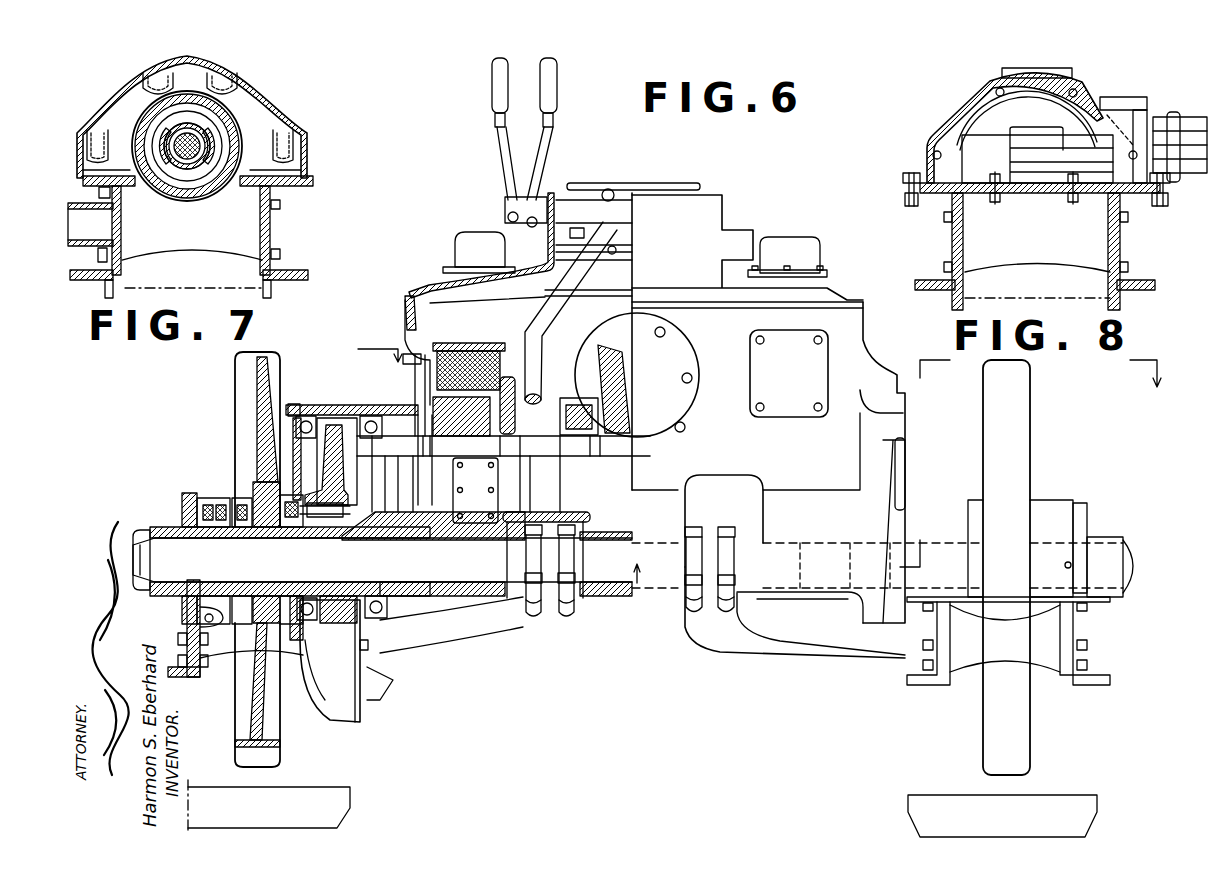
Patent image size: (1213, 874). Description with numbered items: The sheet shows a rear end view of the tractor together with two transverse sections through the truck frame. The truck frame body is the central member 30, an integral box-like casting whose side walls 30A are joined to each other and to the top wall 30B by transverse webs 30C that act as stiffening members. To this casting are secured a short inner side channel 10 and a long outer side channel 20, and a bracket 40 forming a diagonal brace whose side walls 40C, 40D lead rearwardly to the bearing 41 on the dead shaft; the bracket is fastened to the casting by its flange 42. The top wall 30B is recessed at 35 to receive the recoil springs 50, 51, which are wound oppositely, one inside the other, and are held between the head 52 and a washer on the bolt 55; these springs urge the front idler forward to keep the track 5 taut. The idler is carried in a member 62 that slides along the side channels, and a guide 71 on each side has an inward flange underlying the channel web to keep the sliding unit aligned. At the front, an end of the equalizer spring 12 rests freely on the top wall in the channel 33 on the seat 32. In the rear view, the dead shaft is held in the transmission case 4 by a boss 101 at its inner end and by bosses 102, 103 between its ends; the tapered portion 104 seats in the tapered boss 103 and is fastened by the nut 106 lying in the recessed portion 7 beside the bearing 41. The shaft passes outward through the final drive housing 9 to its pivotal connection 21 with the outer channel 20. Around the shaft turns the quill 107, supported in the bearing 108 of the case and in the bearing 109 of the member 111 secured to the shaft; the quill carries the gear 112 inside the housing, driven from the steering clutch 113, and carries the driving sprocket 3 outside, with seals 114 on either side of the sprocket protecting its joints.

In FIG. 6, the driving sprocket 3 is at (264, 755).
In FIG. 6, the transmission case 4 is at (759, 456).
In FIG. 6, the track 5 is at (332, 806).
In FIG. 6, the recessed portion of transmission case 7 is at (550, 512).
In FIG. 6, the final drive housing 9 is at (320, 405).
In FIG. 7, the inner side channel 10 is at (76, 152).
In FIG. 8, the inner side channel 10 is at (1120, 248).
In FIG. 8, the equalizer spring 12 is at (1188, 120).
In FIG. 7, the outer side channel 20 is at (296, 270).
In FIG. 8, the outer side channel 20 is at (952, 248).
In FIG. 6, the outer side channel 20 is at (184, 622).
In FIG. 6, the pivotal connection 21 is at (170, 533).
In FIG. 7, the central member 30 is at (163, 258).
In FIG. 8, the central member 30 is at (1068, 270).
In FIG. 6, the central member 30 is at (228, 660).
In FIG. 7, the side walls 30A is at (121, 231).
In FIG. 8, the side walls 30A is at (963, 243).
In FIG. 7, the top wall 30B is at (210, 202).
In FIG. 8, the top wall 30B is at (1020, 194).
In FIG. 7, the transverse webs 30C is at (200, 255).
In FIG. 8, the transverse webs 30C is at (1010, 270).
In FIG. 6, the transverse webs 30C is at (228, 660).
In FIG. 8, the seat 32 is at (1072, 198).
In FIG. 8, the channel 33 is at (995, 137).
In FIG. 7, the recess 35 is at (166, 196).
In FIG. 7, the bracket 40 is at (90, 205).
In FIG. 6, the bracket 40 is at (567, 630).
In FIG. 6, the side wall of bracket 40C is at (412, 640).
In FIG. 6, the side wall of bracket 40D is at (588, 618).
In FIG. 6, the bearing 41 is at (550, 627).
In FIG. 7, the flange 42 is at (100, 264).
In FIG. 7, the recoil spring 50 is at (212, 140).
In FIG. 7, the recoil spring 51 is at (202, 128).
In FIG. 7, the head 52 is at (222, 192).
In FIG. 8, the head 52 is at (1073, 118).
In FIG. 7, the bolt 55 is at (192, 145).
In FIG. 8, the idler member 62 is at (970, 104).
In FIG. 8, the guide 71 is at (903, 195).
In FIG. 6, the boss 101 is at (593, 597).
In FIG. 6, the boss 102 is at (472, 597).
In FIG. 6, the tapered boss 103 is at (407, 597).
In FIG. 6, the tapered portion of shaft 104 is at (363, 647).
In FIG. 6, the nut 106 is at (518, 627).
In FIG. 6, the quill 107 is at (297, 541).
In FIG. 6, the bearing 108 is at (395, 498).
In FIG. 6, the bearing 109 is at (215, 507).
In FIG. 6, the member 111 is at (180, 527).
In FIG. 6, the gear 112 is at (332, 436).
In FIG. 6, the steering clutch 113 is at (450, 347).
In FIG. 6, the seals 114 is at (282, 488).